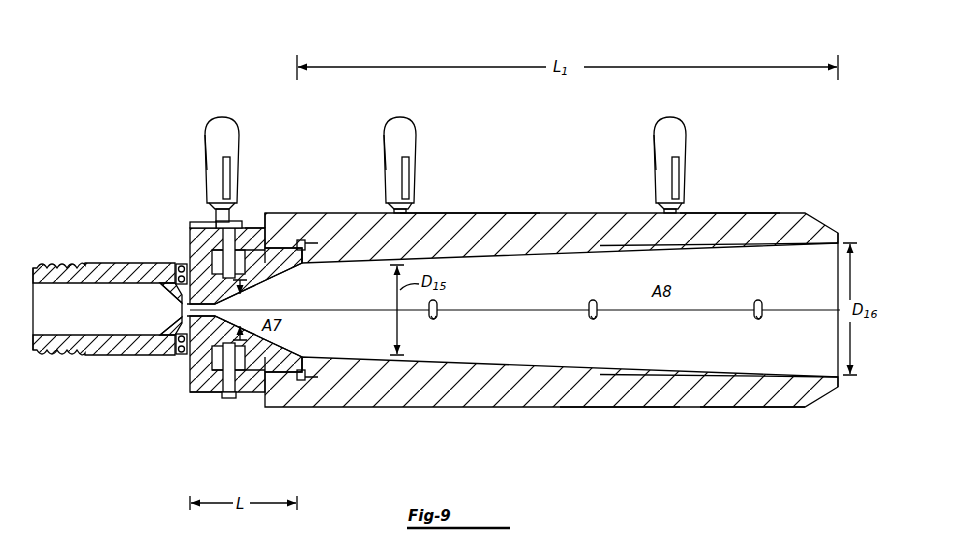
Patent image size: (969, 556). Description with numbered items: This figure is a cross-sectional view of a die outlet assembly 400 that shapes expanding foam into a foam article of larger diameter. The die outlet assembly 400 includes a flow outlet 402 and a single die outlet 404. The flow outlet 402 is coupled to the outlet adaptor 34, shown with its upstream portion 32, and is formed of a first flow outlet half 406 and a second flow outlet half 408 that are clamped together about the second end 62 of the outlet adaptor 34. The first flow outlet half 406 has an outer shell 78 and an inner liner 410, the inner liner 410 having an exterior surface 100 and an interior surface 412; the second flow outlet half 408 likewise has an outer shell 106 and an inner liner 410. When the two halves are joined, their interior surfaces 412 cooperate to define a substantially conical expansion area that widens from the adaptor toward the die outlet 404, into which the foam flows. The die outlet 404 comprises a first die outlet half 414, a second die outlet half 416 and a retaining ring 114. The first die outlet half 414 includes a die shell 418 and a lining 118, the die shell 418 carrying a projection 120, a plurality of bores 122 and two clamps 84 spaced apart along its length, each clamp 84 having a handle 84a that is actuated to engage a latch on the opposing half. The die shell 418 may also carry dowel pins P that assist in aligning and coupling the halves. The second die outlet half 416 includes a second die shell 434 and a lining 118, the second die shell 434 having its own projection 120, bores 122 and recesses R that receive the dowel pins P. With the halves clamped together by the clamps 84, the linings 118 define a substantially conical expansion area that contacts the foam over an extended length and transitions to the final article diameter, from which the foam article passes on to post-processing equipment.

The supply conduit 32 is at (126, 260).
The outlet adaptor 34 is at (153, 322).
The second end of the outlet adaptor 62 is at (232, 300).
The outer shell 78 is at (188, 232).
The clamp 84 is at (213, 116).
The handle 84a is at (210, 140).
The exterior surface 100 is at (280, 232).
The outer shell 106 is at (245, 398).
The retaining ring 114 is at (308, 230).
The lining 118 is at (684, 251).
The projection 120 is at (286, 232).
The bores 122 is at (310, 240).
The die outlet assembly 400 is at (753, 136).
The flow outlet 402 is at (288, 150).
The die outlet 404 is at (546, 200).
The first flow outlet half 406 is at (243, 226).
The second flow outlet half 408 is at (207, 401).
The inner liner 410 is at (296, 276).
The interior surface 412 is at (282, 286).
The first die outlet half 414 is at (474, 211).
The second die outlet half 416 is at (624, 412).
The die shell 418 is at (729, 211).
The second die shell 434 is at (704, 412).
The dowel pins P is at (438, 305).
The recesses R is at (438, 317).